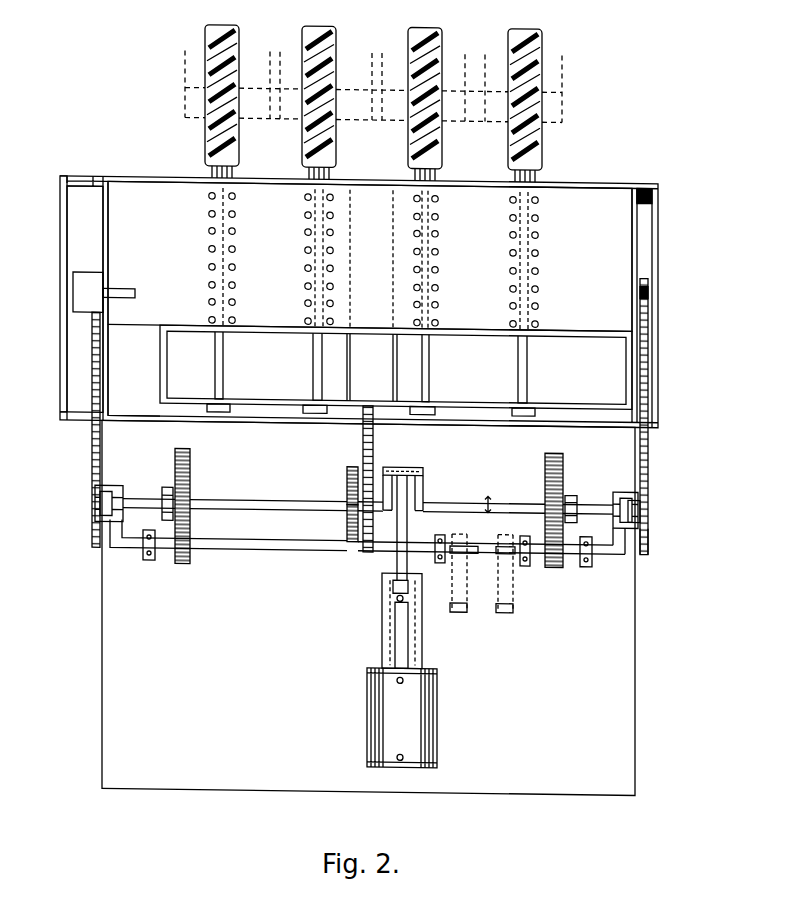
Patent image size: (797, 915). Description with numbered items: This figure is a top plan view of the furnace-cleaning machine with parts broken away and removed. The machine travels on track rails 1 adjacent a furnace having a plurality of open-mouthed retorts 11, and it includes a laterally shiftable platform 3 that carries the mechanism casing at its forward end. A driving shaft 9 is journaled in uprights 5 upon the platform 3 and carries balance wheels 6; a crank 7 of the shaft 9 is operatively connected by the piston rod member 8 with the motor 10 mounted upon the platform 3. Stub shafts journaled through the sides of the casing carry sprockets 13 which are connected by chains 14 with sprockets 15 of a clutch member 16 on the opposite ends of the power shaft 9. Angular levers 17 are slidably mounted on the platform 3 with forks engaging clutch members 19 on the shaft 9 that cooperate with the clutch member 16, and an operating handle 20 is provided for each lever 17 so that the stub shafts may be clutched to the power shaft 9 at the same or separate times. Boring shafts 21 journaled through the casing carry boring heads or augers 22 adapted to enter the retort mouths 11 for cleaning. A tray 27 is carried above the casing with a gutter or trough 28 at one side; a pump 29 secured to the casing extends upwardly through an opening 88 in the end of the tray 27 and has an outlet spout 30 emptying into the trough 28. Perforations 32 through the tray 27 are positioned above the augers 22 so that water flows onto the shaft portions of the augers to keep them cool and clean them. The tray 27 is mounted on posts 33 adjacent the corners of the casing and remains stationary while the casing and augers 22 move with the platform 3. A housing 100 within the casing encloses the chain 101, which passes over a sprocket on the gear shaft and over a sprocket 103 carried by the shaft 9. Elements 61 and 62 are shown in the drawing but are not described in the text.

The track rails 1 is at (483, 503).
The laterally shiftable platform 3 is at (368, 607).
The uprights 5 is at (577, 488).
The balance wheels 6 is at (190, 474).
The crank 7 is at (423, 482).
The piston rod member 8 is at (397, 559).
The driving shaft 9 is at (252, 497).
The motor 10 is at (402, 718).
The retorts 11 is at (185, 105).
The sprockets 13 is at (640, 293).
The chains 14 is at (90, 455).
The sprockets 15 is at (648, 539).
The clutch member 16 is at (640, 507).
The angular levers 17 is at (130, 549).
The clutch members 19 is at (118, 484).
The operating handle 20 is at (505, 608).
The boring shafts 21 is at (510, 167).
The boring heads or augers 22 is at (508, 53).
The tray 27 is at (370, 256).
The gutter or trough 28 is at (134, 370).
The pump 29 is at (83, 288).
The outlet spout 30 is at (128, 297).
The perforations 32 is at (417, 246).
The posts 33 is at (60, 175).
The upper gear 61 is at (347, 480).
The lower gear 62 is at (347, 520).
The opening 88 is at (85, 299).
The housing 100 is at (372, 296).
The chain 101 is at (363, 440).
The sprocket 103 is at (383, 462).